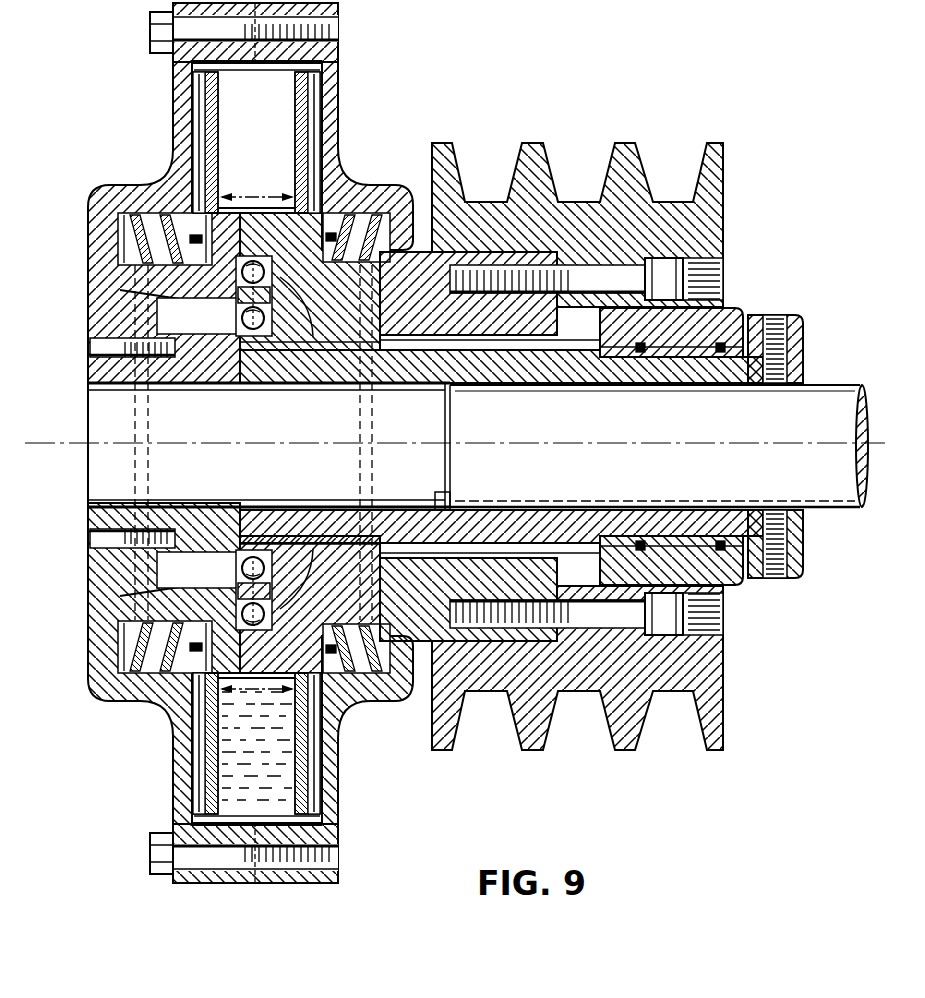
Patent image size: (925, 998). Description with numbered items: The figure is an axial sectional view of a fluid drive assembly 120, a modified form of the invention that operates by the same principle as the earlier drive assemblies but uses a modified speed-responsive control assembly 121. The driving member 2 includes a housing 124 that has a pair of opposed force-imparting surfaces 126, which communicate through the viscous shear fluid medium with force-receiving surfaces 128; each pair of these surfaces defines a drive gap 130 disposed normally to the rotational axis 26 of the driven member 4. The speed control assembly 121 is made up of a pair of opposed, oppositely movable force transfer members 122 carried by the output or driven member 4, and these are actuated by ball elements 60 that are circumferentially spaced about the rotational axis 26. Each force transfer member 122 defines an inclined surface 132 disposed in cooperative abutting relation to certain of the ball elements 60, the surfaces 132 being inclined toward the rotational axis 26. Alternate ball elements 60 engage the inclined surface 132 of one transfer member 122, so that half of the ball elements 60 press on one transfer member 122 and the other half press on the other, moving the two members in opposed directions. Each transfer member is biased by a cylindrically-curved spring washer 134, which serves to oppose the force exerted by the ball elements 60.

The driving member 2 is at (808, 369).
The driven member 4 is at (737, 308).
The rotational axis 26 is at (273, 443).
The ball elements 60 is at (258, 340).
The fluid drive assembly 120 is at (412, 107).
The speed-responsive control assembly 121 is at (249, 178).
The force transfer members 122 is at (293, 93).
The housing 124 is at (330, 68).
The force-imparting surfaces 126 is at (198, 115).
The force-receiving surfaces 128 is at (208, 147).
The drive gap 130 is at (200, 90).
The inclined surface 132 is at (315, 405).
The spring washer 134 is at (150, 418).